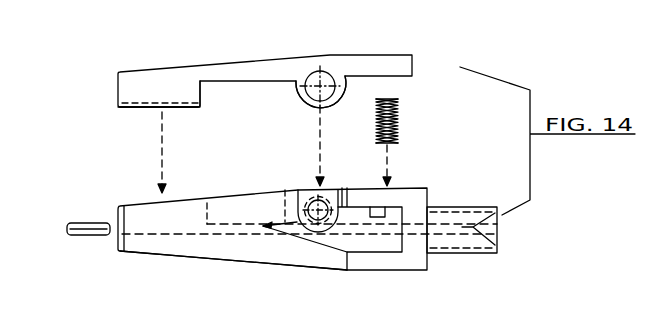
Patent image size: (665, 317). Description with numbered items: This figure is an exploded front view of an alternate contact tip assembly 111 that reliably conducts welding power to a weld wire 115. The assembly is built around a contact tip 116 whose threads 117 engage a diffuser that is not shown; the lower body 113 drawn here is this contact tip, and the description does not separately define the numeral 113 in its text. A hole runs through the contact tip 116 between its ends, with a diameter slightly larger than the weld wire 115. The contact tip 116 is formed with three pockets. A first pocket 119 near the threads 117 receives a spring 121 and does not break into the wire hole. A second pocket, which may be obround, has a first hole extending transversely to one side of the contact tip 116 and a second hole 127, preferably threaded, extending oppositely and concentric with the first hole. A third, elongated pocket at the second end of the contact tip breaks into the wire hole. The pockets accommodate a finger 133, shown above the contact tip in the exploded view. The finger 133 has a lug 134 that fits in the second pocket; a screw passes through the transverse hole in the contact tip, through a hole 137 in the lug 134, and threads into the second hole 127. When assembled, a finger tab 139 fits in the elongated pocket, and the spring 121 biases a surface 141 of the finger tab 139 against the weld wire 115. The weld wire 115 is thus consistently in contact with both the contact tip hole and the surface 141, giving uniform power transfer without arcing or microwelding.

The contact tip assembly 111 is at (277, 228).
The lower body 113 is at (323, 228).
The weld wire 115 is at (82, 236).
The contact tip 116 is at (218, 264).
The threads 117 is at (476, 206).
The first pocket 119 is at (382, 212).
The spring 121 is at (400, 120).
The second hole 127 is at (265, 87).
The finger 133 is at (265, 87).
The lug 134 is at (309, 101).
The hole 137 is at (304, 93).
The finger tab 139 is at (188, 91).
The surface 141 is at (182, 110).